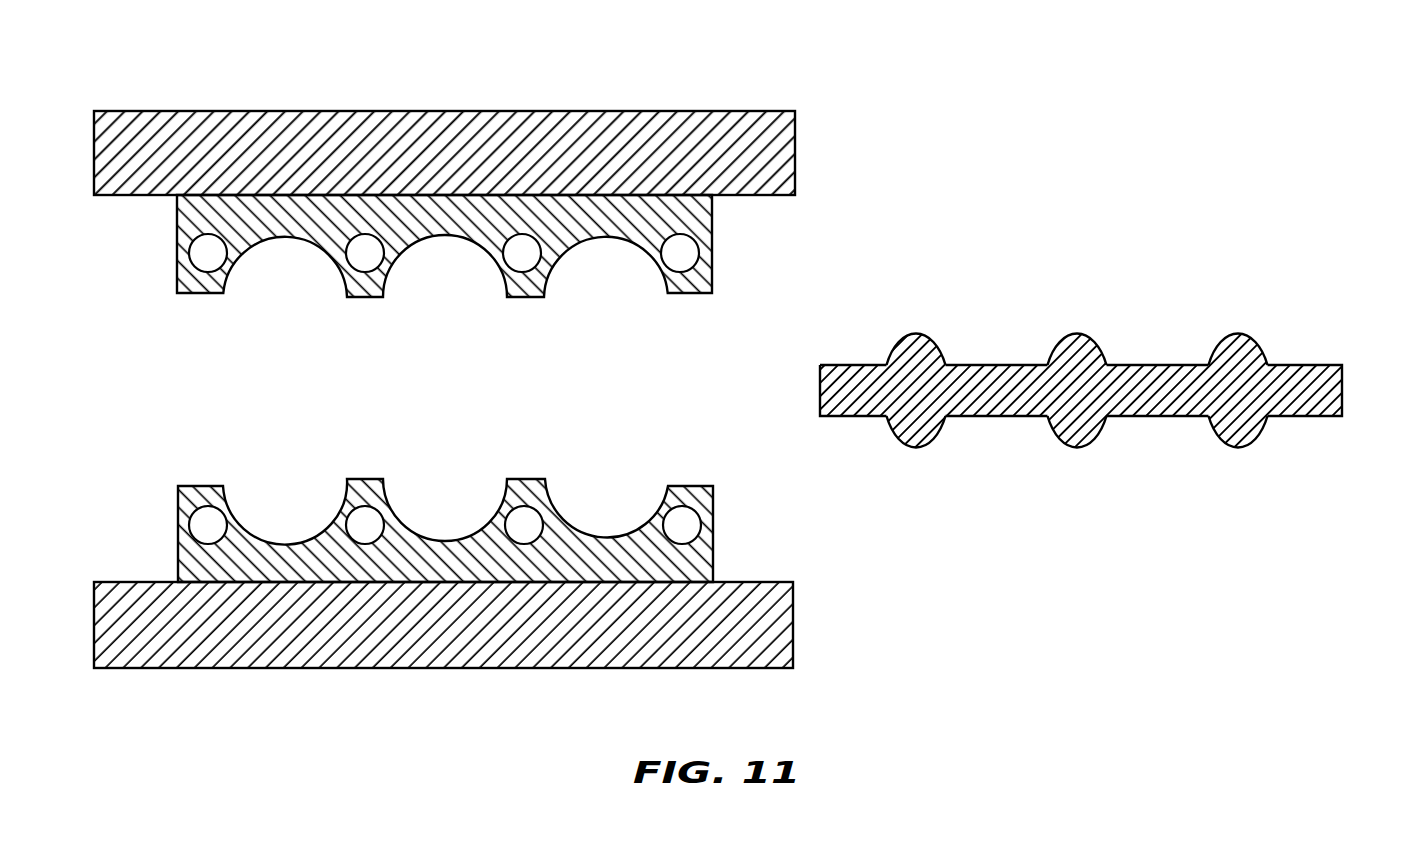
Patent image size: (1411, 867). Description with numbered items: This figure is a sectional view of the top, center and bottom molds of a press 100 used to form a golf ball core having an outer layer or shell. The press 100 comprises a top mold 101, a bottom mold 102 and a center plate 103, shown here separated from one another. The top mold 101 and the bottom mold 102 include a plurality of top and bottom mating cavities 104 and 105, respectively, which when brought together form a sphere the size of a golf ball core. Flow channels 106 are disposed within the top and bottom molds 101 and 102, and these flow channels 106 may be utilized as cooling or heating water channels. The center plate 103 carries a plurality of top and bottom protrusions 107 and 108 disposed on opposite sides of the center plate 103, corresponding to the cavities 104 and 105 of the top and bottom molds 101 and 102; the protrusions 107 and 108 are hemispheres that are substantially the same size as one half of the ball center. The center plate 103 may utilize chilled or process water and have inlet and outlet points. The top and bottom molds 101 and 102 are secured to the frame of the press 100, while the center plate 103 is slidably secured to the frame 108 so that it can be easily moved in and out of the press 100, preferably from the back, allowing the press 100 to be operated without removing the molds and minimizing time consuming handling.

The press 100 is at (488, 96).
The top mold 101 is at (177, 270).
The bottom mold 102 is at (177, 497).
The center plate 103 is at (1342, 392).
The top mating cavities 104 is at (292, 270).
The bottom mating cavities 105 is at (603, 513).
The flow channels 106 is at (207, 253).
The top protrusions 107 is at (916, 334).
The bottom protrusions 108 is at (795, 155).